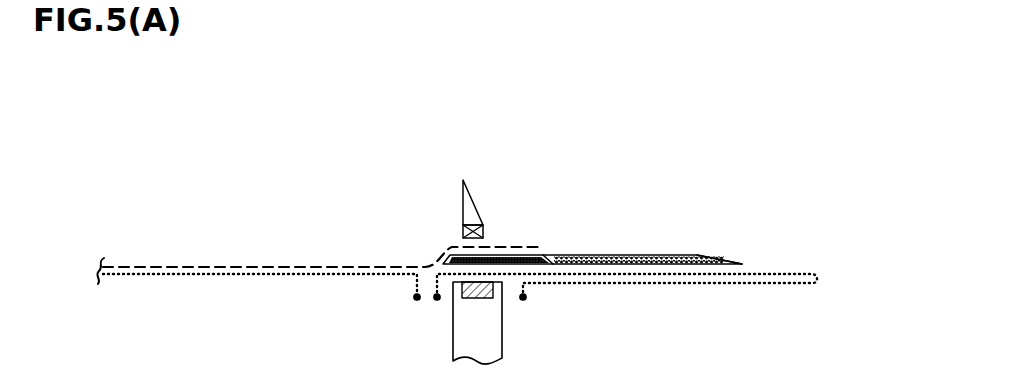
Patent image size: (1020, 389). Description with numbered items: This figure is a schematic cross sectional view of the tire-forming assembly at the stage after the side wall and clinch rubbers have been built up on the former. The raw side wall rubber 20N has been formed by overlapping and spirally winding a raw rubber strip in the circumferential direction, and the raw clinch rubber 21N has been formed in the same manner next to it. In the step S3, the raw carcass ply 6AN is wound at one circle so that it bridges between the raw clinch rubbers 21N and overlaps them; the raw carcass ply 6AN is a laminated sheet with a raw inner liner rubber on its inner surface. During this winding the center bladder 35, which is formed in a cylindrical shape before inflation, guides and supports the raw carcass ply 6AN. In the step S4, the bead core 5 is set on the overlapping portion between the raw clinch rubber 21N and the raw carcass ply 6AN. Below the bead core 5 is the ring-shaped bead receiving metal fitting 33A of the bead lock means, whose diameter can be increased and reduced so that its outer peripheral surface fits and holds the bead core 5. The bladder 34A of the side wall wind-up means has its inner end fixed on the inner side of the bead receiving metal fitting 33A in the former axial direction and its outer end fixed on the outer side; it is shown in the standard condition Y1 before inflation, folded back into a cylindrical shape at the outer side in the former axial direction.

The bead core 5 is at (478, 208).
The raw carcass ply 6AN is at (281, 264).
The raw side wall rubber 20N is at (667, 257).
The raw clinch rubber 21N is at (523, 258).
The bead receiving metal fitting 33A is at (502, 345).
The bladder 34A is at (760, 266).
The center bladder 35 is at (310, 280).
The step of winding the raw carcass ply S3 is at (252, 250).
The step of setting the bead core S4 is at (497, 218).
The standard condition Y1 is at (792, 247).